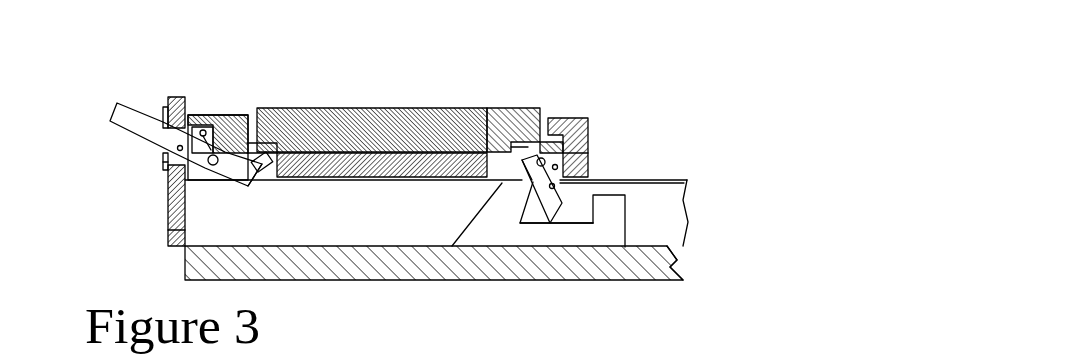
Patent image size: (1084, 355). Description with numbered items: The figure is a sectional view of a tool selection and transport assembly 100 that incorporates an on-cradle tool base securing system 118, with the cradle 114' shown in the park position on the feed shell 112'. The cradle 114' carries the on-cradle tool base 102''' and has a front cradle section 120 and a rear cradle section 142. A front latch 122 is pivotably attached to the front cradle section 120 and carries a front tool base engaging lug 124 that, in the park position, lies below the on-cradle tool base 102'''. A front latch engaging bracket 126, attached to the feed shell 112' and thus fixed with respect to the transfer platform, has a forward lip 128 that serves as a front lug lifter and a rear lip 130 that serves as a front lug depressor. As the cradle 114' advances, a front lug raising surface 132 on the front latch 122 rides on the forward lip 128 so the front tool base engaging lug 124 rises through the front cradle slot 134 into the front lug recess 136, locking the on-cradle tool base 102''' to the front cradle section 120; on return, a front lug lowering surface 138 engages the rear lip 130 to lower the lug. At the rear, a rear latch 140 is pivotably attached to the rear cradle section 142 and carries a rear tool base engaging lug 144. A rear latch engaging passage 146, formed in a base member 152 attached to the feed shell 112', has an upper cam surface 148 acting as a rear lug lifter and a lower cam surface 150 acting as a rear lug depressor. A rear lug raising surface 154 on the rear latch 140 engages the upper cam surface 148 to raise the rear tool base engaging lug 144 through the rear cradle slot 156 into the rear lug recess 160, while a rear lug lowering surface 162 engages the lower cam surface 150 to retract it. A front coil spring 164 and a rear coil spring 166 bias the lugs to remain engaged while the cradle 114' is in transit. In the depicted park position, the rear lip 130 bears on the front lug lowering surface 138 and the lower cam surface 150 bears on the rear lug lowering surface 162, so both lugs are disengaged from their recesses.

The tool selection and transport assembly 100 is at (780, 62).
The on-cradle tool base 102''' is at (372, 102).
The feed shell 112' is at (434, 292).
The cradle 114' is at (436, 213).
The on-cradle tool base securing system 118 is at (683, 125).
The front cradle section 120 is at (593, 110).
The front latch 122 is at (558, 200).
The front tool base engaging lug 124 is at (528, 147).
The front latch engaging bracket 126 is at (680, 278).
The forward lip 128 is at (593, 195).
The rear lip 130 is at (527, 190).
The front lug raising surface 132 is at (561, 203).
The front cradle slot 134 is at (488, 177).
The front lug recess 136 is at (542, 140).
The front lug lowering surface 138 is at (533, 185).
The rear latch 140 is at (243, 183).
The rear cradle section 142 is at (204, 100).
The rear tool base engaging lug 144 is at (268, 158).
The rear latch engaging passage 146 is at (162, 128).
The upper cam surface 148 is at (163, 110).
The lower cam surface 150 is at (165, 170).
The base member 152 is at (170, 228).
The rear lug raising surface 154 is at (113, 113).
The rear cradle slot 156 is at (258, 177).
The rear lug recess 160 is at (255, 140).
The rear lug lowering surface 162 is at (132, 133).
The front coil spring 164 is at (587, 152).
The rear coil spring 166 is at (199, 160).